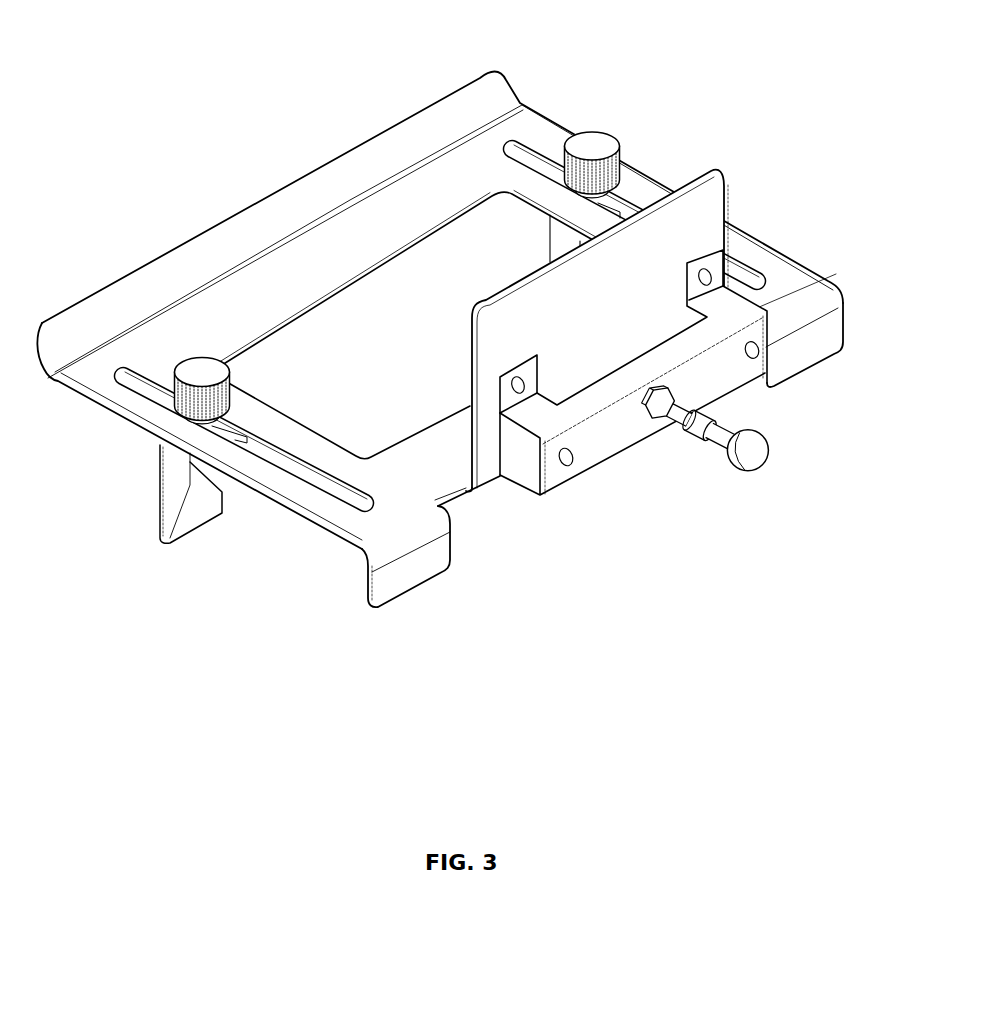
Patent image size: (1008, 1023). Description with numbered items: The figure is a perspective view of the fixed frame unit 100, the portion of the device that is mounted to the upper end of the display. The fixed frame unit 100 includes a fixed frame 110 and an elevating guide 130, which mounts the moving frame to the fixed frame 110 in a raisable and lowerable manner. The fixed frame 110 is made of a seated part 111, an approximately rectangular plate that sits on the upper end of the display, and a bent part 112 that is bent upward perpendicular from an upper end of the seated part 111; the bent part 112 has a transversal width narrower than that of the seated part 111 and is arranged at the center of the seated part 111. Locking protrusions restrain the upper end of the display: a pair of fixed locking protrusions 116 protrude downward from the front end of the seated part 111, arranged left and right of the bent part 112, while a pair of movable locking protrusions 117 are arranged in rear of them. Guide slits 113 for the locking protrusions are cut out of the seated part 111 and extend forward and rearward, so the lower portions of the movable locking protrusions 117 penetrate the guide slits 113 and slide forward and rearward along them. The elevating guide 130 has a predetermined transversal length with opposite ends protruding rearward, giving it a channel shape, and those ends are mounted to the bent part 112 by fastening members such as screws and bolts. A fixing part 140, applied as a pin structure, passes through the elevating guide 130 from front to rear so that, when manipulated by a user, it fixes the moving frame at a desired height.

The fixed frame unit 100 is at (464, 340).
The fixed frame 110 is at (522, 81).
The seated part 111 is at (561, 132).
The bent part 112 is at (717, 198).
The guide slits for the locking protrusions 113 is at (147, 388).
The fixed locking protrusions 116 is at (415, 575).
The movable locking protrusions 117 is at (603, 147).
The elevating guide 130 is at (754, 391).
The fixing part 140 is at (711, 460).